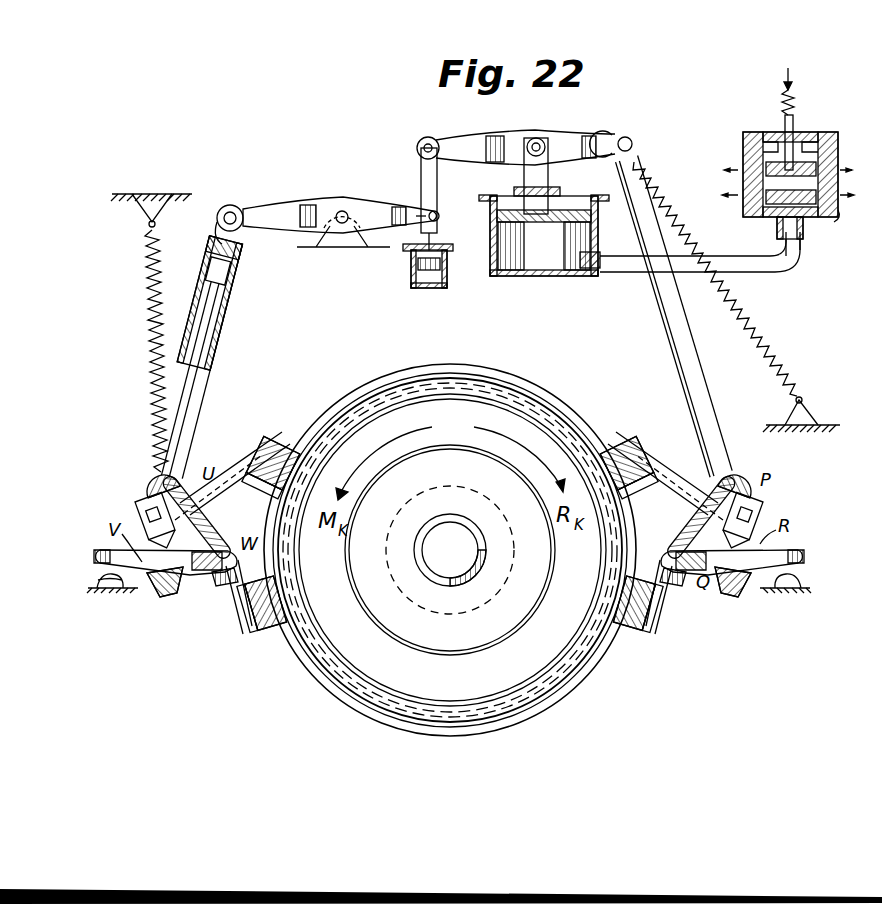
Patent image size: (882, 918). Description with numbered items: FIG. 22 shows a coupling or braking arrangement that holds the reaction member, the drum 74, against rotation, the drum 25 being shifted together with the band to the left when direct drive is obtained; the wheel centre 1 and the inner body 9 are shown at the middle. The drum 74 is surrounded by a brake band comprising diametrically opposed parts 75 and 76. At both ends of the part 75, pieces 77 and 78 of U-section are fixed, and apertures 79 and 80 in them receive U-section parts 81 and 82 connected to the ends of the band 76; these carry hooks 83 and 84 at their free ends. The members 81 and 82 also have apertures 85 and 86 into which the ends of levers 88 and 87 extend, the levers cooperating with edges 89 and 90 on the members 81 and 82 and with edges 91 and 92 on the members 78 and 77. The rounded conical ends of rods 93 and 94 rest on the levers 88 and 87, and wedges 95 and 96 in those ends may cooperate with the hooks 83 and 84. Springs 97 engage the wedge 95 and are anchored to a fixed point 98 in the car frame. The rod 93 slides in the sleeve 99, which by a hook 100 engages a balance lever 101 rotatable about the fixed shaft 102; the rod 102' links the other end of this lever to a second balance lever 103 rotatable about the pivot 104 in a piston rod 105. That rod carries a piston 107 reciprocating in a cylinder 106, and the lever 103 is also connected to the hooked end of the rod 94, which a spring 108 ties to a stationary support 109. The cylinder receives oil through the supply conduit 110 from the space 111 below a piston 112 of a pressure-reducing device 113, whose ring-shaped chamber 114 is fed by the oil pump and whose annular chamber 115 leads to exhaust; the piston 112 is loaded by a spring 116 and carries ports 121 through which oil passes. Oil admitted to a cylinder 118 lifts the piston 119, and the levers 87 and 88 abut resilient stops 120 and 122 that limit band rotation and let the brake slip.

The wheel hub / axle 1 is at (458, 526).
The wheel 9 is at (462, 448).
The drum 25 is at (400, 398).
The drum 74 is at (482, 374).
The brake band part 75 is at (549, 410).
The brake band part 76 is at (565, 690).
The U-section piece 77 is at (640, 440).
The U-section piece 78 is at (284, 432).
The aperture 79 is at (662, 478).
The aperture 80 is at (236, 476).
The U-section part 81 is at (244, 628).
The U-section part 82 is at (660, 620).
The hook 83 is at (152, 478).
The hook 84 is at (738, 480).
The aperture 85 is at (224, 588).
The aperture 86 is at (670, 592).
The lever 87 is at (810, 550).
The lever 88 is at (94, 548).
The edge 89 is at (226, 524).
The edge 90 is at (674, 528).
The edge 91 is at (156, 606).
The edge 92 is at (730, 604).
The rod 93 is at (186, 410).
The rod 94 is at (694, 380).
The wedge 95 is at (142, 502).
The wedge 96 is at (756, 506).
The springs 97 is at (150, 288).
The fixed point in the frame of a motor car 98 is at (132, 212).
The sleeve 99 is at (220, 328).
The hook 100 is at (234, 204).
The balance lever 101 is at (294, 204).
The fixed shaft 102 is at (343, 242).
The rod 102' is at (407, 190).
The second balance lever 103 is at (506, 138).
The pivot 104 is at (546, 142).
The piston rod 105 is at (548, 168).
The cylinder 106 is at (590, 230).
The piston 107 is at (552, 222).
The spring 108 is at (752, 292).
The stationary support 109 is at (808, 406).
The liquid (oil) supply conduit 110 is at (628, 274).
The space 111 is at (770, 226).
The piston 112 is at (780, 138).
The pressure-reducing device 113 is at (806, 240).
The ring-shaped chamber 114 is at (836, 216).
The annular chamber 115 is at (834, 148).
The spring 116 is at (784, 96).
The cylinder 118 is at (446, 280).
The piston 119 is at (410, 262).
The stop 120 is at (800, 592).
The ports 121 is at (744, 180).
The stop 122 is at (98, 584).